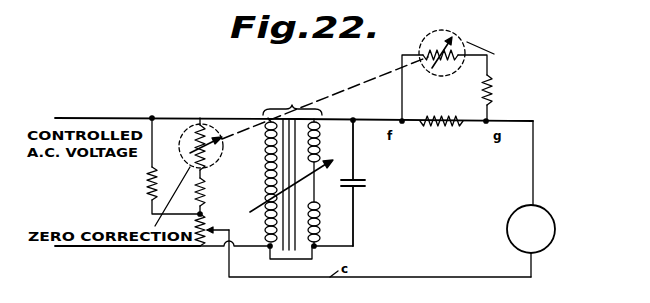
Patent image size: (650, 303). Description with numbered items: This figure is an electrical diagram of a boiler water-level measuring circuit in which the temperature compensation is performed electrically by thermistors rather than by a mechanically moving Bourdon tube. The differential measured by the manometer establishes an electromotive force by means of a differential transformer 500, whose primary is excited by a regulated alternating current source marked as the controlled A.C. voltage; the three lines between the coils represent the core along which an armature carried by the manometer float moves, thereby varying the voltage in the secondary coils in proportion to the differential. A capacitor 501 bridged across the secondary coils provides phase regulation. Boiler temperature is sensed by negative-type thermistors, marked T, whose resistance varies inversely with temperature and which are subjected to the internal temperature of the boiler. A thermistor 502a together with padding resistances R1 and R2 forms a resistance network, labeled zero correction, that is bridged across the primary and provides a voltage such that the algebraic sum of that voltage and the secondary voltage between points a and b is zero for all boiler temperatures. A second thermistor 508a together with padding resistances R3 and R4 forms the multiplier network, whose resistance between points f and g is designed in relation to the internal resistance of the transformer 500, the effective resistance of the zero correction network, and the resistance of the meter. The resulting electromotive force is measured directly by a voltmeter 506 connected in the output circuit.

The differential transformer 500 is at (291, 178).
The capacitor 501 is at (367, 182).
The thermistor 502a is at (211, 167).
The voltmeter 506 is at (548, 212).
The thermistor 508a is at (457, 31).
The padding resistance R1 is at (210, 192).
The padding resistance R2 is at (139, 183).
The padding resistance R3 is at (496, 90).
The padding resistance R4 is at (441, 131).